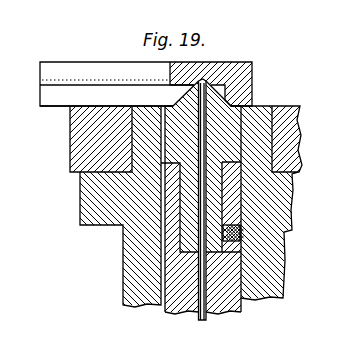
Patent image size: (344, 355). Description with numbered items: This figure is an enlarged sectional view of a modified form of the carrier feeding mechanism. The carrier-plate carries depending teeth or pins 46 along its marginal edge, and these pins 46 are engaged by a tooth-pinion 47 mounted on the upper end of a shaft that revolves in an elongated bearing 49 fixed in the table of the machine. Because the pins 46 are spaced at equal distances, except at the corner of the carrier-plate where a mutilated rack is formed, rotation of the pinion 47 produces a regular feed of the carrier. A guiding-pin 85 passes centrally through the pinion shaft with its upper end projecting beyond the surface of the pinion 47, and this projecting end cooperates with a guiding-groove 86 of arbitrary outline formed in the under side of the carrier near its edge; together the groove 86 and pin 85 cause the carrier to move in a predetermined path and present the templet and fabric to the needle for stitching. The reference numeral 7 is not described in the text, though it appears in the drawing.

The guiding-groove 86 is at (106, 79).
The tooth-pinion 47 is at (232, 125).
The block 7 is at (80, 153).
The elongated bearing 49 is at (122, 270).
The depending teeth or pins 46 is at (166, 304).
The guiding-pin 85 is at (257, 294).